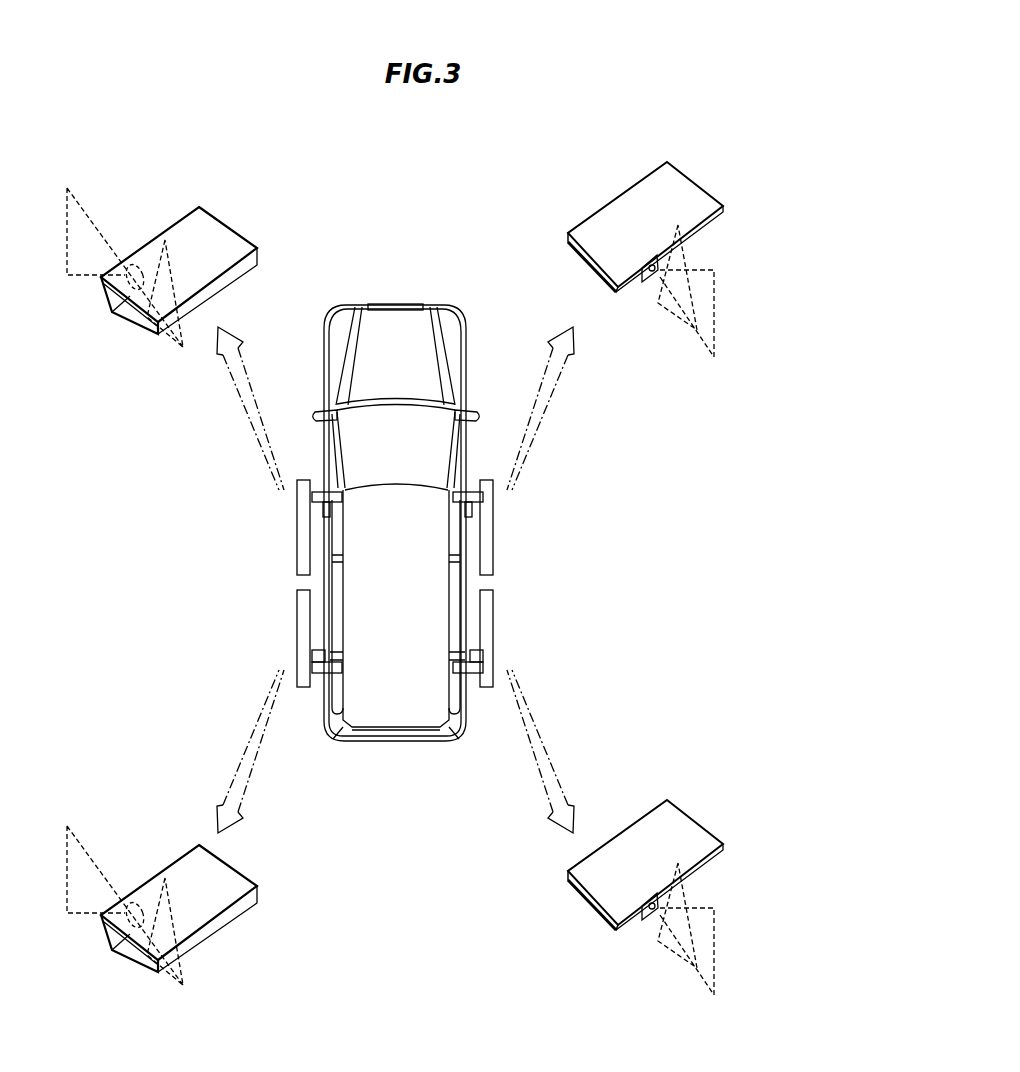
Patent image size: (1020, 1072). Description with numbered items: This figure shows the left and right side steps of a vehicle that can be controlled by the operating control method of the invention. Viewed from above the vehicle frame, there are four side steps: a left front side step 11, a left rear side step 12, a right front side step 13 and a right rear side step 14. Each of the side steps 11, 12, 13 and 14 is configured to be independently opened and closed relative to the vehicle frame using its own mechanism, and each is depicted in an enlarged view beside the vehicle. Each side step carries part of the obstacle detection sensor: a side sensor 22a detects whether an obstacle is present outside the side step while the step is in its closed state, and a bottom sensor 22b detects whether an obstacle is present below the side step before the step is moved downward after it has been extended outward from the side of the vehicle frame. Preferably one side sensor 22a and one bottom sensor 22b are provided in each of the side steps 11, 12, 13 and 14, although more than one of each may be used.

The left front side step 11 is at (218, 230).
The left rear side step 12 is at (232, 888).
The right front side step 13 is at (650, 198).
The right rear side step 14 is at (650, 836).
The side sensor 22a is at (131, 288).
The bottom sensor 22b is at (165, 240).